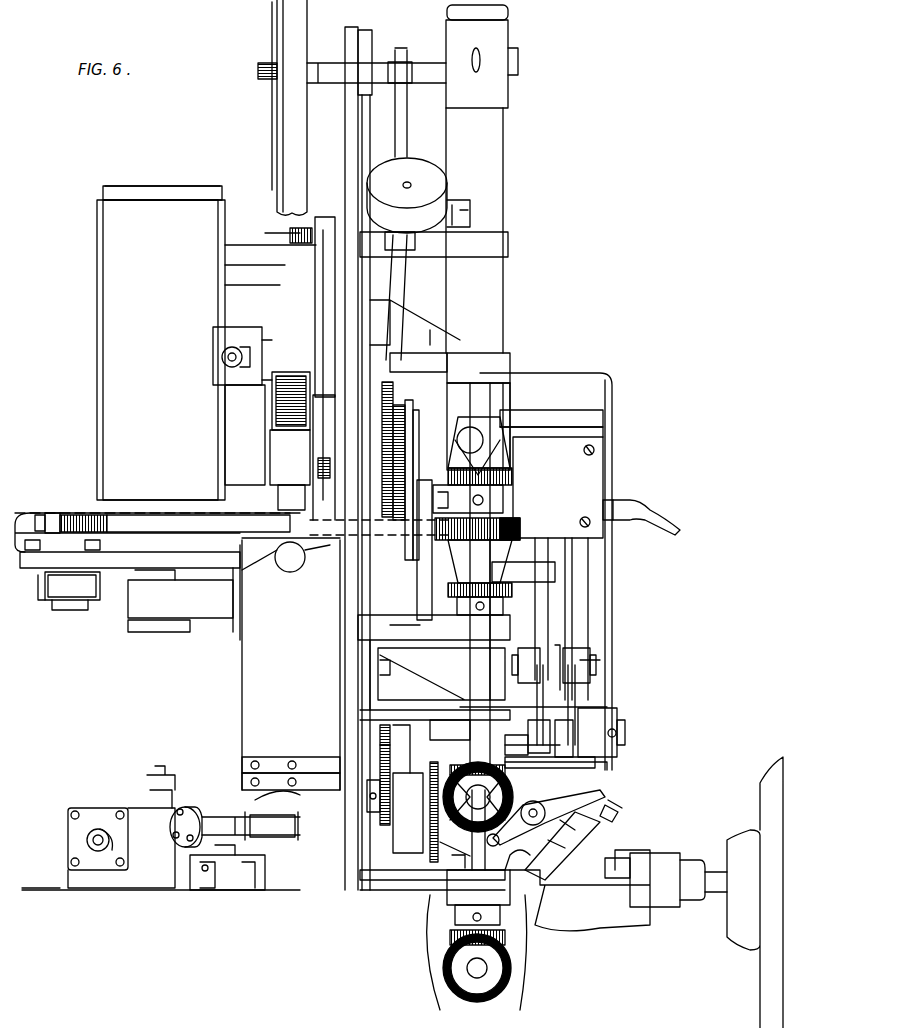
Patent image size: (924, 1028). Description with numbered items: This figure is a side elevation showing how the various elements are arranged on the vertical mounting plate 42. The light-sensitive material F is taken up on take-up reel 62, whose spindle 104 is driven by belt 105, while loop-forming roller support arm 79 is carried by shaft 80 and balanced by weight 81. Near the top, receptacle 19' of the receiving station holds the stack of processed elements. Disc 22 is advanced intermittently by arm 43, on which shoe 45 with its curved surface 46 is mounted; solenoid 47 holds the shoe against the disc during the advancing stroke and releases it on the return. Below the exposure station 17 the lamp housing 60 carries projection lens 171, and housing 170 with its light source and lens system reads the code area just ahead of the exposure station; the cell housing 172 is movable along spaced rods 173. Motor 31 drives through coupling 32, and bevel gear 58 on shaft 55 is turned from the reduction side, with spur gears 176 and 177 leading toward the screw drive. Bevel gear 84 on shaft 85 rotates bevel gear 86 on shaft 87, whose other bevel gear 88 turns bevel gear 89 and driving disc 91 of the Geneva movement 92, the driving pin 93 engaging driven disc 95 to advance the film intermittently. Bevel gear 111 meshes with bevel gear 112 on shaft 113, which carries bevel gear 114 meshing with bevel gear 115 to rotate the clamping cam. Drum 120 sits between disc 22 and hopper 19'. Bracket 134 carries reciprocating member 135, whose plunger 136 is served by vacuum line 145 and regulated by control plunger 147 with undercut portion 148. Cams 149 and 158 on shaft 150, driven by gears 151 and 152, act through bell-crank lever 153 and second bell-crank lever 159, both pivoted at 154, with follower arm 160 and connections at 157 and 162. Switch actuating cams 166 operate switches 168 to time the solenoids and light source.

The spindle 104 is at (266, 62).
The take-up reel 62 is at (277, 97).
The light-sensitive material F is at (280, 196).
The mounting plate 42 is at (345, 150).
The belt 105 is at (403, 120).
The weight 81 is at (386, 165).
The receptacle 19' is at (494, 237).
The shaft 80 is at (310, 218).
The arm 79 is at (318, 283).
The housing 170 is at (105, 377).
The exposure station 17 is at (270, 512).
The disc 22 is at (105, 515).
The shoe 45 is at (52, 512).
The curved surface 46 is at (60, 514).
The arm 43 is at (35, 570).
The solenoid 47 is at (68, 600).
The projection lens 171 is at (128, 628).
The lamp housing 60 is at (248, 690).
The driven disc 95 is at (385, 385).
The bevel gear 115 is at (430, 440).
The driving pin 93 is at (405, 525).
The Geneva movement 92 is at (413, 548).
The driving disc 91 is at (420, 620).
The drum 120 is at (505, 382).
The bevel gear 114 is at (512, 478).
The shaft 113 is at (482, 550).
The bevel gear 89 is at (455, 560).
The bevel gear 88 is at (505, 590).
The reciprocating member 135 is at (548, 410).
The bracket 134 is at (595, 460).
The vacuum line 145 is at (645, 505).
The plunger 136 is at (550, 625).
The control plunger 147 is at (570, 598).
The pivot connection 157 is at (518, 672).
The pivot connection 162 is at (595, 658).
The undercut portion 148 is at (580, 650).
The pivot 154 is at (590, 668).
The bell-crank lever 153 is at (537, 692).
The second bell-crank lever 159 is at (590, 688).
The follower arm 160 is at (580, 712).
The cam 158 is at (590, 748).
The shaft 150 is at (445, 720).
The cam 149 is at (560, 760).
The gear 152 is at (380, 730).
The gear 151 is at (380, 765).
The shaft 55 is at (365, 800).
The spur gear 176 is at (410, 735).
The bevel gear 58 is at (430, 815).
The bevel gear 112 is at (498, 785).
The shaft 87 is at (492, 797).
The bevel gear 111 is at (545, 800).
The switch 168 is at (612, 803).
The switch actuating cam 166 is at (462, 838).
The spur gear 177 is at (430, 858).
The bevel gear 86 is at (508, 935).
The bevel gear 84 is at (445, 968).
The shaft 85 is at (470, 975).
The motor 31 is at (760, 783).
The coupling 32 is at (655, 853).
The housing 172 is at (212, 805).
The spaced rods 173 is at (272, 838).